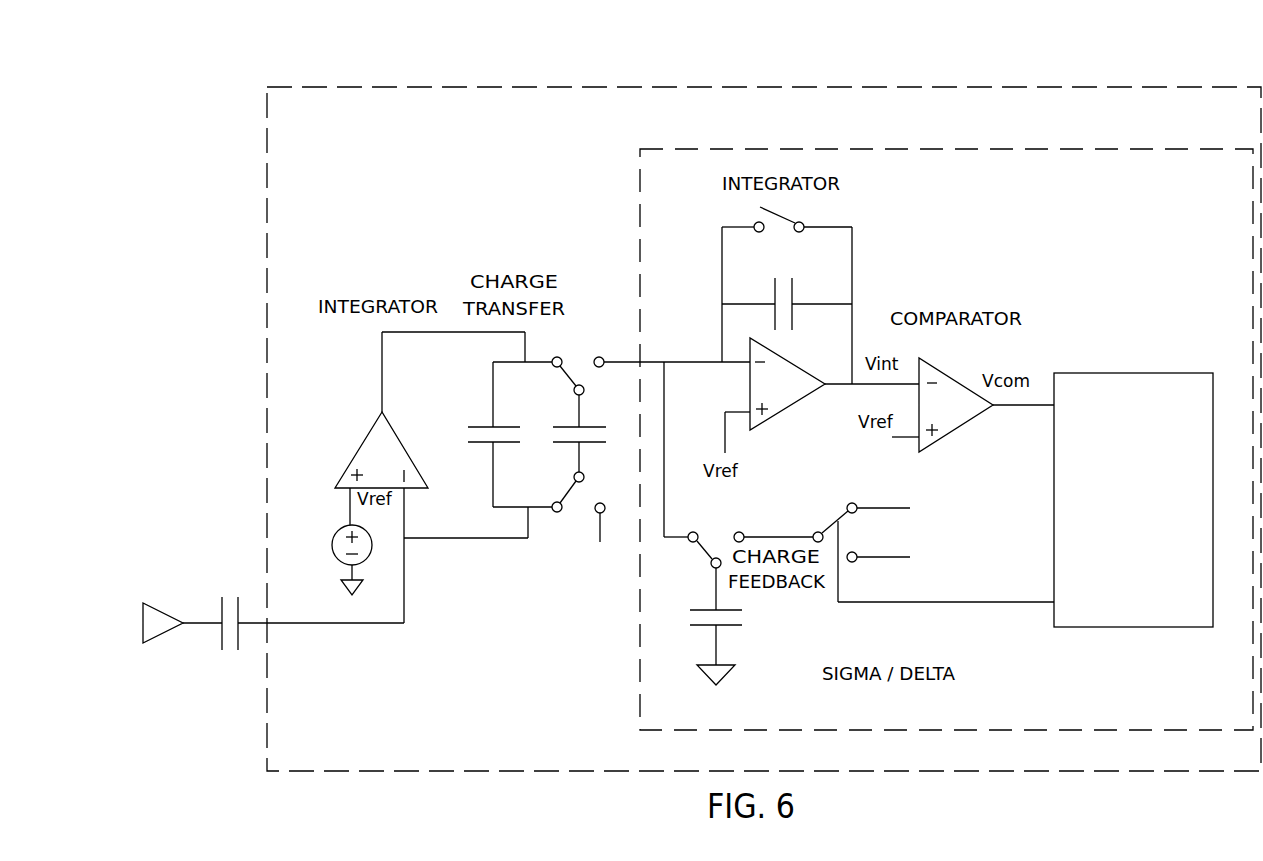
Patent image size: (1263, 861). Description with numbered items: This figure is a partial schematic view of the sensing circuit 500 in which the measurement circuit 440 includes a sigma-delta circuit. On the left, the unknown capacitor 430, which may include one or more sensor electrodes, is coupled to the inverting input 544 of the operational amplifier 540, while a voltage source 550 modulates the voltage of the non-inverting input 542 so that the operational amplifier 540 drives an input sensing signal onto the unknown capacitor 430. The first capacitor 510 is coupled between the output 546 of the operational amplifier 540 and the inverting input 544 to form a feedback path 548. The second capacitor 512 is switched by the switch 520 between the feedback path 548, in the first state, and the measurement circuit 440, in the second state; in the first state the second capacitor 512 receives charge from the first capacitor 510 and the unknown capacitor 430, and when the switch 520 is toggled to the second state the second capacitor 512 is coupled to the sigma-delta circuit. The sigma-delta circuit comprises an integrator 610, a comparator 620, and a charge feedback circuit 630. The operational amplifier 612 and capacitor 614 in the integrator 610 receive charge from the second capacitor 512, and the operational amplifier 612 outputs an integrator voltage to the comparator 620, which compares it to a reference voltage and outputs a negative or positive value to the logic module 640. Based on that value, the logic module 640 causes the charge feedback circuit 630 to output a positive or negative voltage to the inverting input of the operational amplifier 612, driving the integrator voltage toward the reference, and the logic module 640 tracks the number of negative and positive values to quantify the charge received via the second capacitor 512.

The sensing circuit 500 is at (810, 87).
The measurement circuit 440 is at (1018, 149).
The unknown capacitor 430 is at (227, 657).
The operational amplifier 540 is at (360, 452).
The output 546 is at (368, 400).
The non-inverting input 542 is at (333, 500).
The inverting input 544 is at (415, 498).
The voltage source 550 is at (338, 568).
The feedback path 548 is at (478, 545).
The first capacitor 510 is at (480, 420).
The second capacitor 512 is at (562, 448).
The switch 520 is at (578, 343).
The integrator 610 is at (848, 212).
The capacitor 614 is at (815, 295).
The operational amplifier 612 is at (790, 410).
The comparator 620 is at (1027, 363).
The logic module 640 is at (1133, 373).
The charge feedback circuit 630 is at (803, 602).